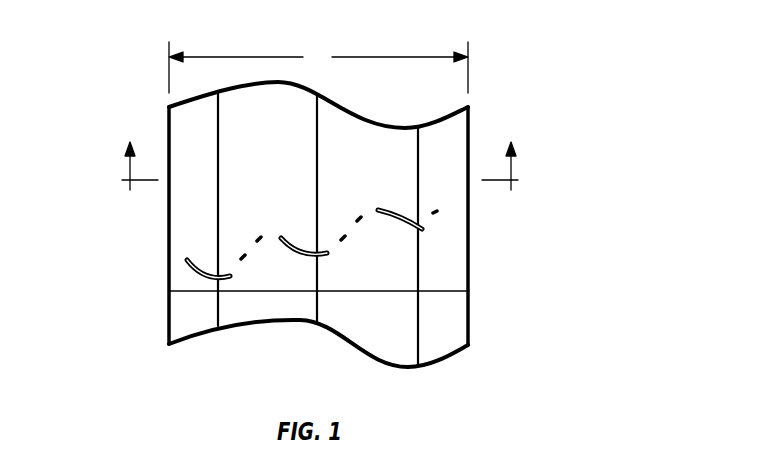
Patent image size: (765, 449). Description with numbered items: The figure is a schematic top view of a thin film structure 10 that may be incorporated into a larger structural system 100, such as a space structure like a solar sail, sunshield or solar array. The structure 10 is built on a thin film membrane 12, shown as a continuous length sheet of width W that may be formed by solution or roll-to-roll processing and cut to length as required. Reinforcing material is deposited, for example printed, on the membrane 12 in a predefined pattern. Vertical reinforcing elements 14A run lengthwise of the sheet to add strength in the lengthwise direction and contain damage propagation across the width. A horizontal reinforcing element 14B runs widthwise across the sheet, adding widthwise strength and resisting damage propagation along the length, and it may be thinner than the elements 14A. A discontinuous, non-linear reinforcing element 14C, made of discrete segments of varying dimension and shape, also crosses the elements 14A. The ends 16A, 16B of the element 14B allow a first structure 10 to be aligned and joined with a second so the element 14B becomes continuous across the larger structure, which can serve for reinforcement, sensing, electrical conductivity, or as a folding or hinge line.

The structural system 100 is at (622, 148).
The thin film structure 10 is at (258, 33).
The thin film membrane 12 is at (438, 337).
The reinforcing elements 14A is at (218, 133).
The reinforcing element 14B is at (378, 291).
The reinforcing element 14C is at (422, 229).
The end of reinforcing element 16A is at (169, 291).
The end of reinforcing element 16B is at (469, 291).